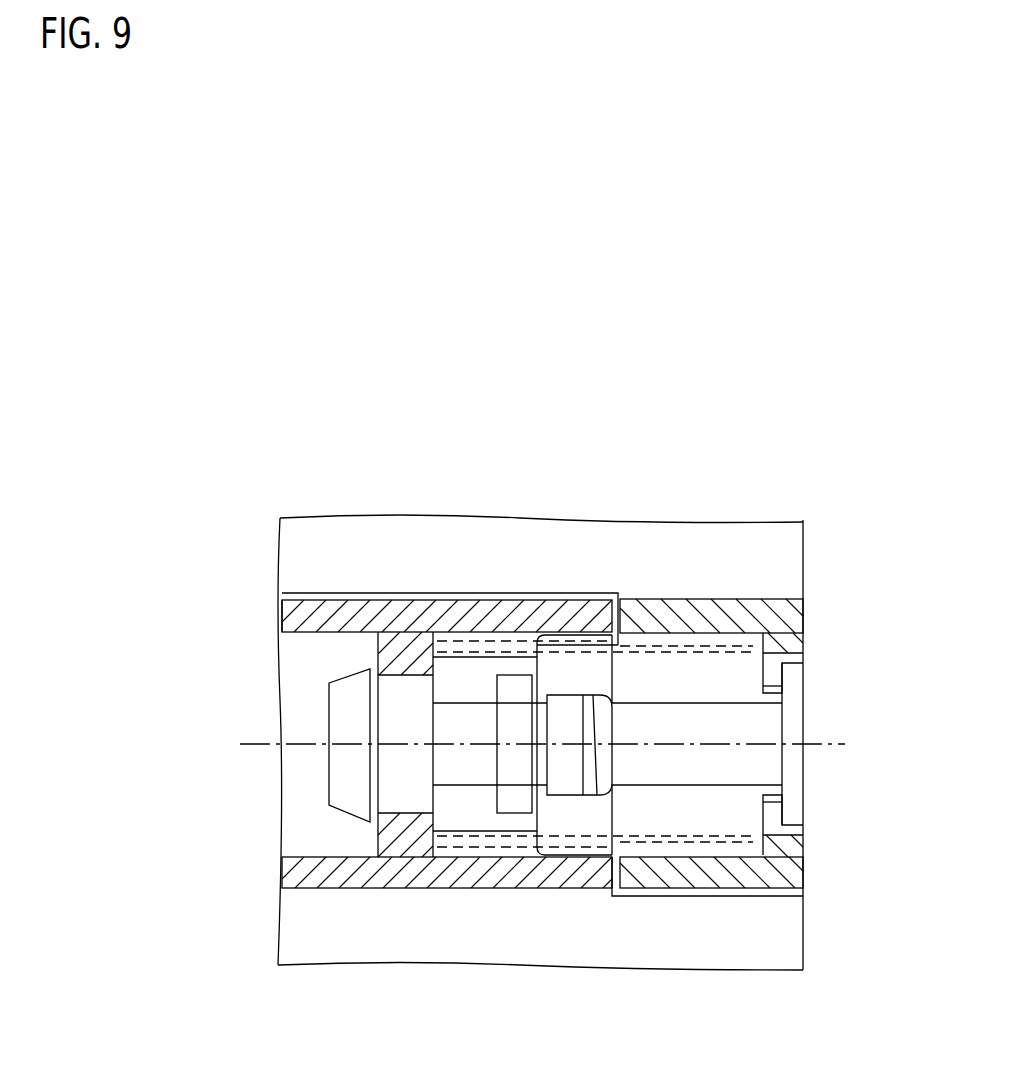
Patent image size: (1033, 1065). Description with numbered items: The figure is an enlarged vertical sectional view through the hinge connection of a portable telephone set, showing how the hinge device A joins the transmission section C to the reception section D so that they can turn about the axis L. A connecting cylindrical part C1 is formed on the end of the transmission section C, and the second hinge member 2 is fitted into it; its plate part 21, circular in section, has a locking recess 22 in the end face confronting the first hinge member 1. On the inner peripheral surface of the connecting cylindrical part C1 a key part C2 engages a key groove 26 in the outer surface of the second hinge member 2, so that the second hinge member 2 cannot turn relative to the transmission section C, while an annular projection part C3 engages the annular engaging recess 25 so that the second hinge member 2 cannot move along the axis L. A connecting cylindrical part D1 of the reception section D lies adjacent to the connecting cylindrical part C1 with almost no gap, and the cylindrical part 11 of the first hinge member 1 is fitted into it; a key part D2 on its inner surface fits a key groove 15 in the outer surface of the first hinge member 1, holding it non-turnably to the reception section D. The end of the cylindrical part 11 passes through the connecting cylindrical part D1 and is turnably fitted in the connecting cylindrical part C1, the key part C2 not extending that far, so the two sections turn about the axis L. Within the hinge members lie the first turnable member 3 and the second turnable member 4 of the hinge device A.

The first hinge member 1 is at (718, 619).
The second hinge member 2 is at (462, 622).
The first turnable member 3 is at (560, 765).
The second turnable member 4 is at (517, 690).
The cylindrical part 11 is at (653, 660).
The key groove 15 is at (740, 645).
The plate part 21 is at (463, 820).
The locking recess 22 is at (370, 663).
The annular engaging recess 25 is at (403, 795).
The key groove 26 is at (497, 645).
The hinge device A is at (694, 620).
The transmission section C is at (533, 863).
The connecting cylindrical part C1 is at (286, 620).
The key part C2 is at (470, 650).
The annular projection part C3 is at (407, 695).
The reception section D is at (588, 548).
The connecting cylindrical part D1 is at (800, 615).
The key part D2 is at (795, 640).
The axis L is at (835, 743).